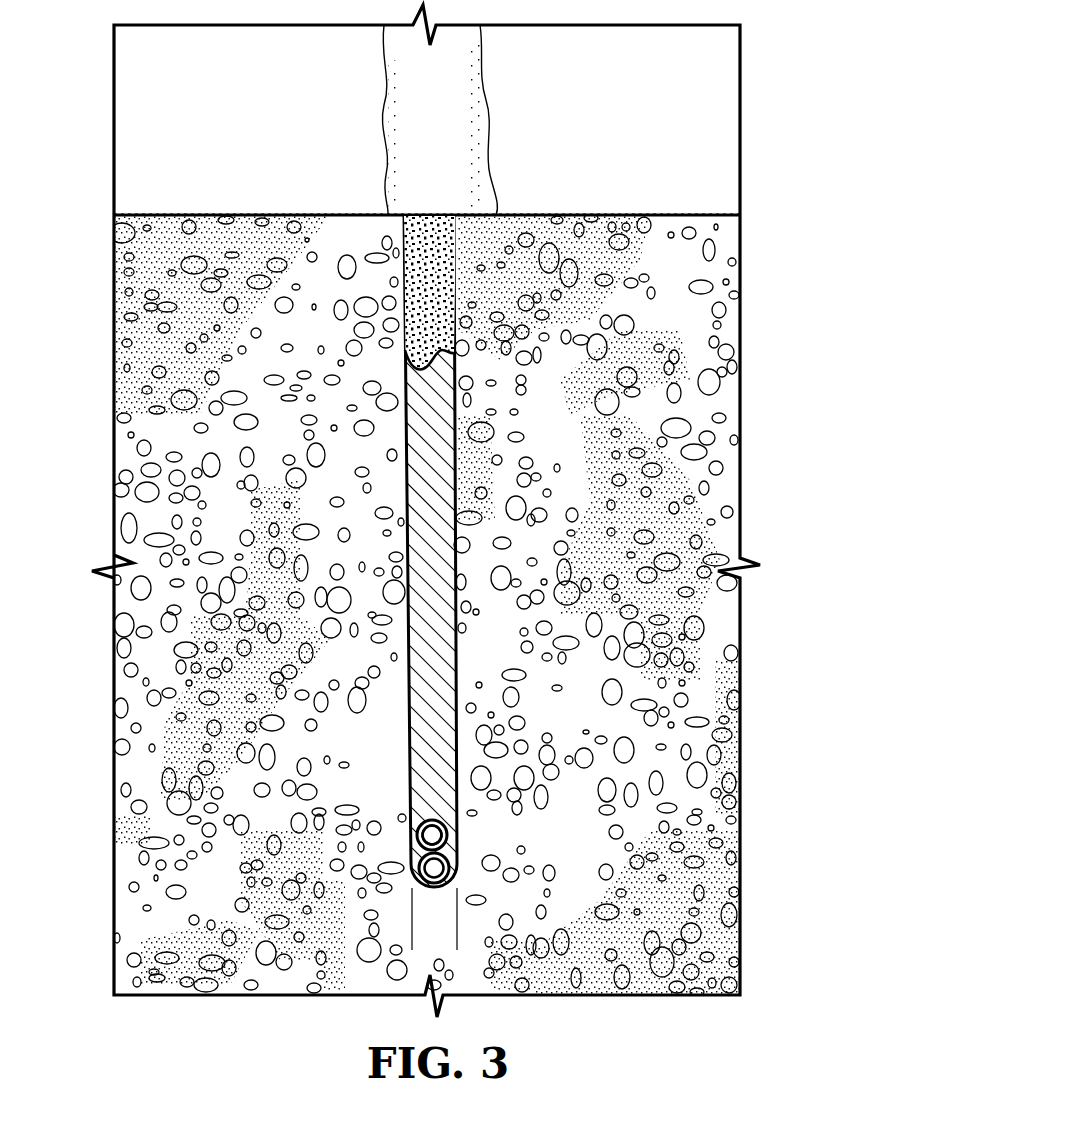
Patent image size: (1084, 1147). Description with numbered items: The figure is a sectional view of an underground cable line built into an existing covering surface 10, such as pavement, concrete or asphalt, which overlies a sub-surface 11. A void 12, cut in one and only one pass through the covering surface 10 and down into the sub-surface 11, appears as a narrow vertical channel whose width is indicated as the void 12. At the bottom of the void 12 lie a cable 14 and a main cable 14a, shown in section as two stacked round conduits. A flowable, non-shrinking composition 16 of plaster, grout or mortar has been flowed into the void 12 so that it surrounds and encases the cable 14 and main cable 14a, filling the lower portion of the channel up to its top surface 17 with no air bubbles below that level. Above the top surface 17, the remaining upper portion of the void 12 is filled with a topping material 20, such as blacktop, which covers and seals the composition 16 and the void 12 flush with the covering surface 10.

The covering surface 10 is at (570, 101).
The sub-surface 11 is at (637, 405).
The void 12 is at (386, 937).
The cable 14 is at (454, 868).
The main cable 14a is at (432, 835).
The composition 16 is at (439, 660).
The top surface 17 is at (420, 385).
The topping material 20 is at (459, 158).